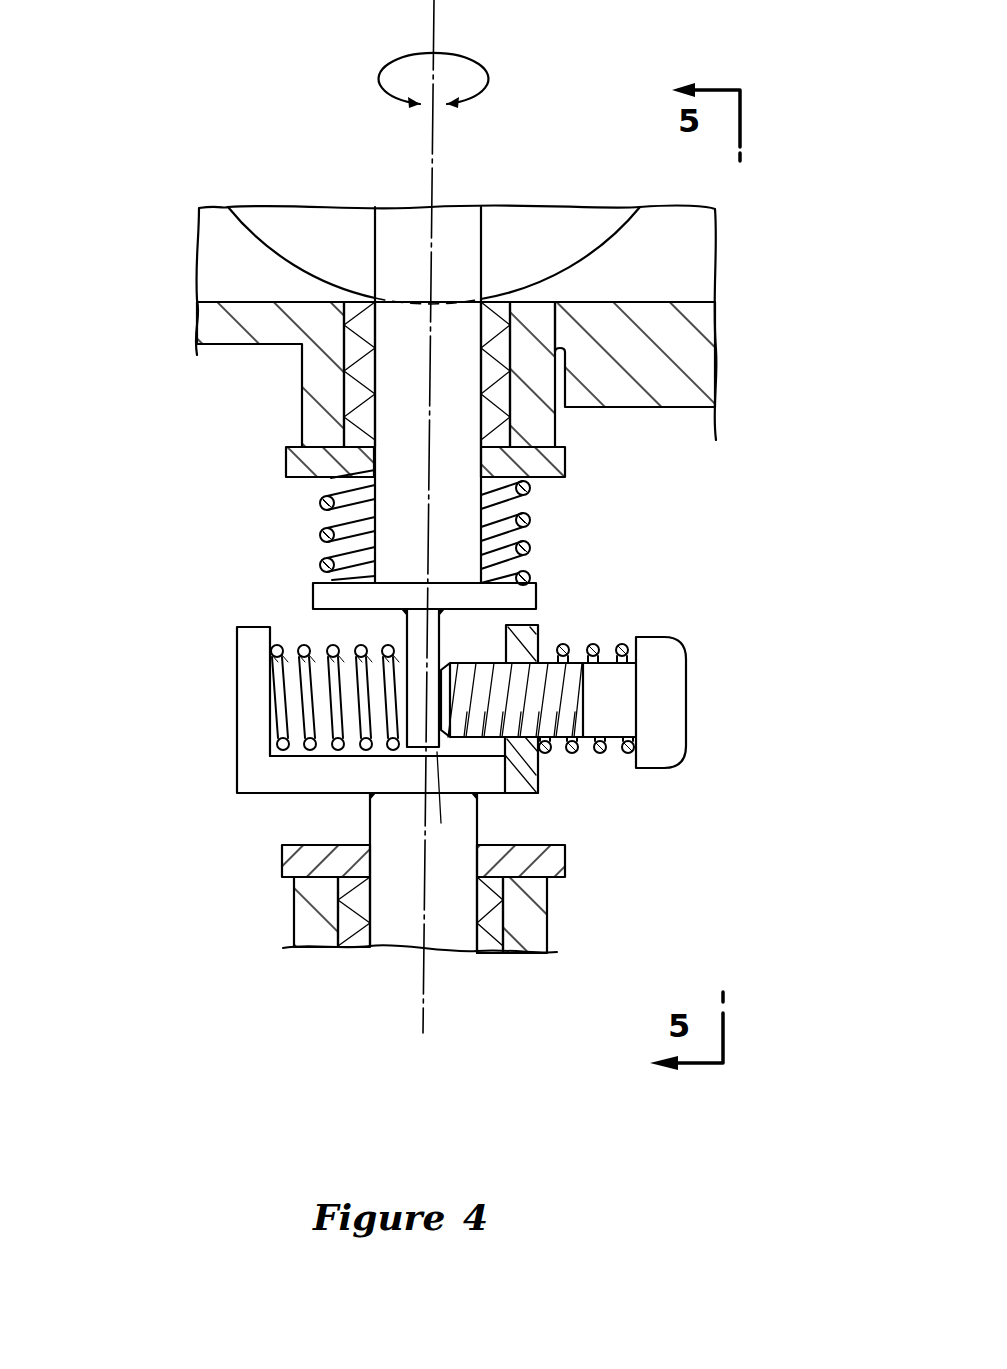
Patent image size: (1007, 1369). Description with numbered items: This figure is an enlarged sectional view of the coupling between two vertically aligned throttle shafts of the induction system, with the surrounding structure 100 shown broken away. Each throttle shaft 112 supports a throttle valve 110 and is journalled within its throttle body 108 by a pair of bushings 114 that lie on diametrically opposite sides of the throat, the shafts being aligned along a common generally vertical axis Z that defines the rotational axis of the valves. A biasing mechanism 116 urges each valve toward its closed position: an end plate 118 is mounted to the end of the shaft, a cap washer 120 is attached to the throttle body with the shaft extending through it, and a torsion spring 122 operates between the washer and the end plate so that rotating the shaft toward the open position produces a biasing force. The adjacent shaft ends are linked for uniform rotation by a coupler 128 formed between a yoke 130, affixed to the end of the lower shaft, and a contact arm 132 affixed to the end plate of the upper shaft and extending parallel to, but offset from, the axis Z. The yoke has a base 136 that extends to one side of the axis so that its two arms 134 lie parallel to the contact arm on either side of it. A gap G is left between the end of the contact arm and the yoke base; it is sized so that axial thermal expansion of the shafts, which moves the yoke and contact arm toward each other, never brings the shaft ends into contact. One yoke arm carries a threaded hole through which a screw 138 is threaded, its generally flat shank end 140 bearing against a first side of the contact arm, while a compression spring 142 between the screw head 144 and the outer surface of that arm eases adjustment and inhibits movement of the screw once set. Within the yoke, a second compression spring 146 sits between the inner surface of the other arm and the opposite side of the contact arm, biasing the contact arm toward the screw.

The housing 100 is at (650, 414).
The throttle body 108 is at (266, 328).
The throttle valve 110 is at (557, 240).
The throttle shaft 112 is at (456, 216).
The bushing 114 is at (355, 305).
The biasing mechanism 116 is at (253, 530).
The end plate 118 is at (533, 594).
The cap washer 120 is at (557, 465).
The torsion spring 122 is at (530, 522).
The coupler 128 is at (807, 647).
The yoke 130 is at (257, 777).
The contact arm 132 is at (441, 628).
The yoke arm 134 is at (245, 653).
The yoke base 136 is at (527, 780).
The screw 138 is at (692, 674).
The flat end of screw shank 140 is at (441, 668).
The compression spring 142 is at (600, 755).
The screw head 144 is at (665, 745).
The second compression spring 146 is at (277, 720).
The gap G is at (446, 805).
The axis Z is at (422, 1007).